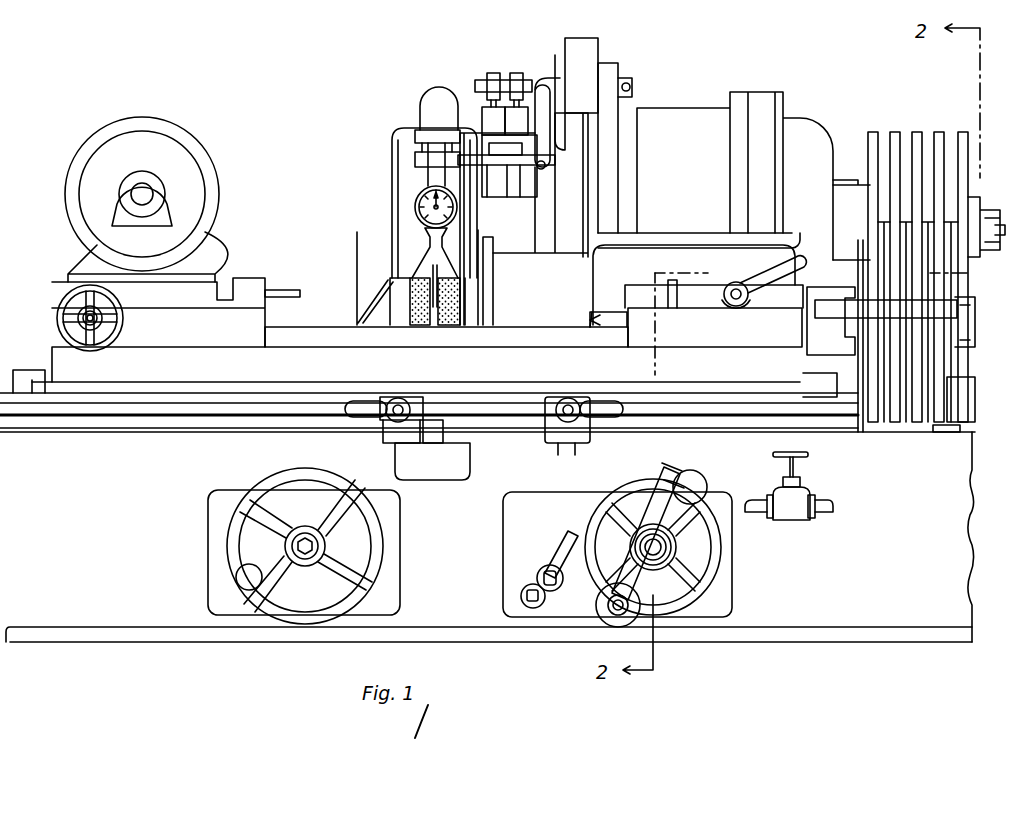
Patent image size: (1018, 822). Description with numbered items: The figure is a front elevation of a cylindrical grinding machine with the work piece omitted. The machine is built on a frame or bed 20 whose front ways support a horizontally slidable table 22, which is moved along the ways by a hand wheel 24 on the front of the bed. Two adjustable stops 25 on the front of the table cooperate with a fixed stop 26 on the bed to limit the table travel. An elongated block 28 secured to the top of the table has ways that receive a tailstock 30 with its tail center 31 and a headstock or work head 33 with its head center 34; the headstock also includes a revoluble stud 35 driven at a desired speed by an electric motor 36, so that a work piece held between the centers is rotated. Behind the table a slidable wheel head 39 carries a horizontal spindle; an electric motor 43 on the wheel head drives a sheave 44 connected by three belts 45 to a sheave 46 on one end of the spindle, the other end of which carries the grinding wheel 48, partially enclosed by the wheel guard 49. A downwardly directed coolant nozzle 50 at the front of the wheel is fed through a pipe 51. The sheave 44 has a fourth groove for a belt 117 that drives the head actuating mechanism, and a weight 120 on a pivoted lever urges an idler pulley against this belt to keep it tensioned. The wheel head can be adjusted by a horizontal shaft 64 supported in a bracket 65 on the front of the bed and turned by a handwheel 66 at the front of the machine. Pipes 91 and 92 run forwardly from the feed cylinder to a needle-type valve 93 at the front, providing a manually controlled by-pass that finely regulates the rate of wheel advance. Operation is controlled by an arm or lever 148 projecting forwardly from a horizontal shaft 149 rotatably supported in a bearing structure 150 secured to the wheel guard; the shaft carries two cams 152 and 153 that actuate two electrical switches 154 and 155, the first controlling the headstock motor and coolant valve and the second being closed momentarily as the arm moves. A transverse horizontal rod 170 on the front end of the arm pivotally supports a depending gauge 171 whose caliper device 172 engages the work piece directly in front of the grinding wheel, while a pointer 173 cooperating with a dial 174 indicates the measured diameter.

The frame or bed 20 is at (147, 612).
The table 22 is at (487, 395).
The hand wheel 24 is at (277, 482).
The adjustable stops 25 is at (385, 432).
The fixed stop 26 is at (447, 437).
The elongated block 28 is at (446, 330).
The tailstock 30 is at (715, 301).
The tail center 31 is at (592, 320).
The headstock or work head 33 is at (158, 307).
The head center 34 is at (267, 315).
The revoluble stud 35 is at (288, 290).
The electric motor 36 is at (193, 183).
The wheel head 39 is at (694, 310).
The electric motor 43 is at (685, 116).
The sheave 44 is at (870, 152).
The belts 45 is at (935, 132).
The sheave 46 is at (865, 400).
The grinding wheel 48 is at (455, 300).
The wheel guard 49 is at (370, 242).
The coolant nozzle 50 is at (405, 260).
The pipe 51 is at (428, 96).
The shaft 64 is at (648, 546).
The bracket 65 is at (520, 547).
The handwheel 66 is at (717, 557).
The pipe 91 is at (757, 502).
The pipe 92 is at (825, 503).
The valve 93 is at (790, 510).
The belt 117 is at (960, 132).
The weight 120 is at (963, 392).
The arm or lever 148 is at (528, 160).
The horizontal shaft 149 is at (480, 80).
The bearing structure 150 is at (582, 50).
The cam 152 is at (494, 73).
The cam 153 is at (530, 55).
The electrical switch 154 is at (492, 112).
The electrical switch 155 is at (520, 118).
The transverse horizontal rod 170 is at (518, 197).
The gauge 171 is at (445, 237).
The caliper device 172 is at (443, 318).
The pointer 173 is at (418, 203).
The dial 174 is at (417, 210).